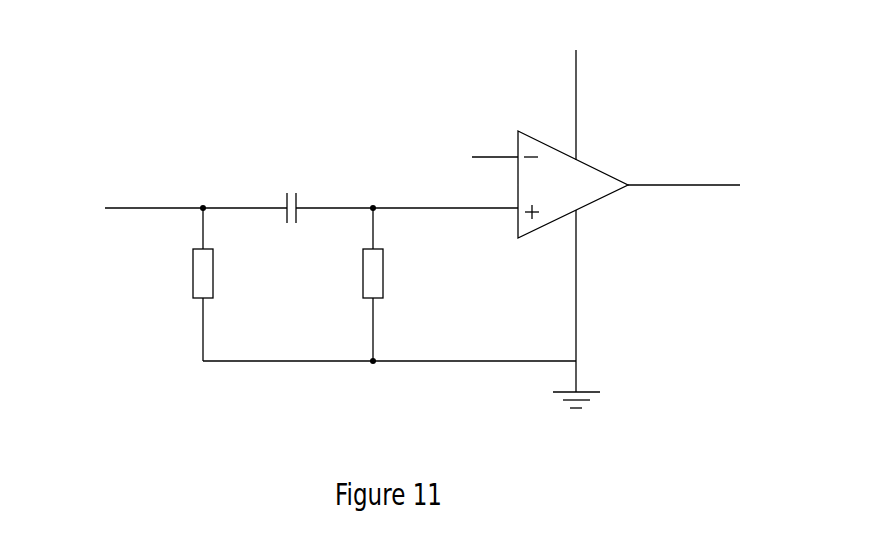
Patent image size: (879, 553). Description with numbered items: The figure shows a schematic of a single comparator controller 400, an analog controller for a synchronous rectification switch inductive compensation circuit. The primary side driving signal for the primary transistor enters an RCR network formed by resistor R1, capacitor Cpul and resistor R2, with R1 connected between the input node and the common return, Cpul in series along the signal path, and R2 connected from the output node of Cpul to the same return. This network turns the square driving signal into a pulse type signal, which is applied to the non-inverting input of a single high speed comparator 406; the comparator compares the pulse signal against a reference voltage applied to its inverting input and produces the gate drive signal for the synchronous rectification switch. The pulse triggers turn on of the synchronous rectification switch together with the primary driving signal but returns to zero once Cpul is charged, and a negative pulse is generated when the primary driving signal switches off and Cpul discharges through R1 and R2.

The single comparator controller 400 is at (186, 41).
The single high speed comparator 406 is at (606, 220).
The resistor R1 is at (221, 284).
The resistor R2 is at (391, 284).
The capacitor Cpul is at (286, 226).